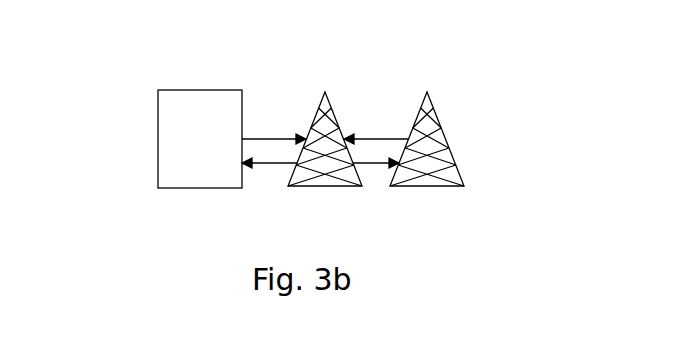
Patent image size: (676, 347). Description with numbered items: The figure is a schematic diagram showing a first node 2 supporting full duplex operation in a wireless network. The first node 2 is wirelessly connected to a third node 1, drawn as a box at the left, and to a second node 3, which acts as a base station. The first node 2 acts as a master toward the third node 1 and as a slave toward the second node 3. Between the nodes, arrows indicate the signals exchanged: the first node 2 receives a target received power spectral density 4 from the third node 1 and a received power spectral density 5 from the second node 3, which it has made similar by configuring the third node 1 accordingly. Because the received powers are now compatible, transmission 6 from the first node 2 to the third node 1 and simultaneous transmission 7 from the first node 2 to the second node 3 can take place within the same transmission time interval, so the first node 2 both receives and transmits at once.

The third node 1 is at (158, 143).
The first node 2 is at (353, 163).
The second node 3 is at (455, 168).
The target received power spectral density 4 is at (267, 138).
The received power spectral density 5 is at (373, 139).
The transmission from the first node to the third node 6 is at (272, 163).
The transmission from the first node to the second node 7 is at (378, 165).